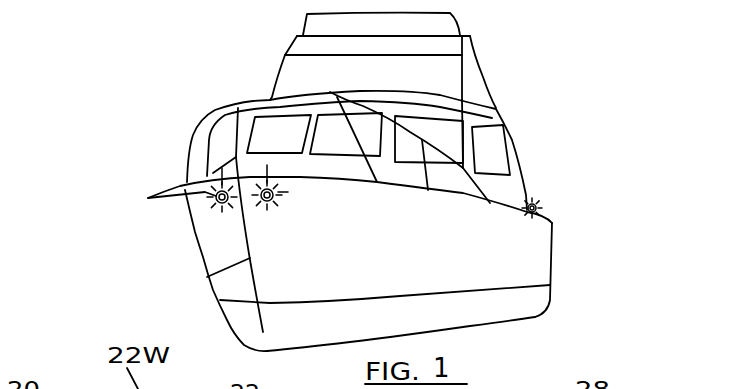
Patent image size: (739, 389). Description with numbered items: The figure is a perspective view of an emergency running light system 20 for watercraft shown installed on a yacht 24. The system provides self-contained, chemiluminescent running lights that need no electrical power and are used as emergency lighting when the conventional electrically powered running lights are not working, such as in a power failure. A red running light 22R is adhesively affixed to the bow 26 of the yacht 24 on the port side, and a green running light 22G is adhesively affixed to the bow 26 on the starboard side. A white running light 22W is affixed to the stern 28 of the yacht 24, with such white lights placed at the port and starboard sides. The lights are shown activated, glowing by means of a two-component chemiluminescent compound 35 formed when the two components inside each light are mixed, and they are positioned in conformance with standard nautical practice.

The emergency running light system 20 is at (116, 169).
The green running light 22G is at (216, 204).
The red running light 22R is at (268, 203).
The white running light 22W is at (541, 208).
The yacht 24 is at (535, 142).
The bow 26 is at (207, 277).
The stern 28 is at (556, 233).
The two-component chemiluminescent compound 35 is at (215, 197).